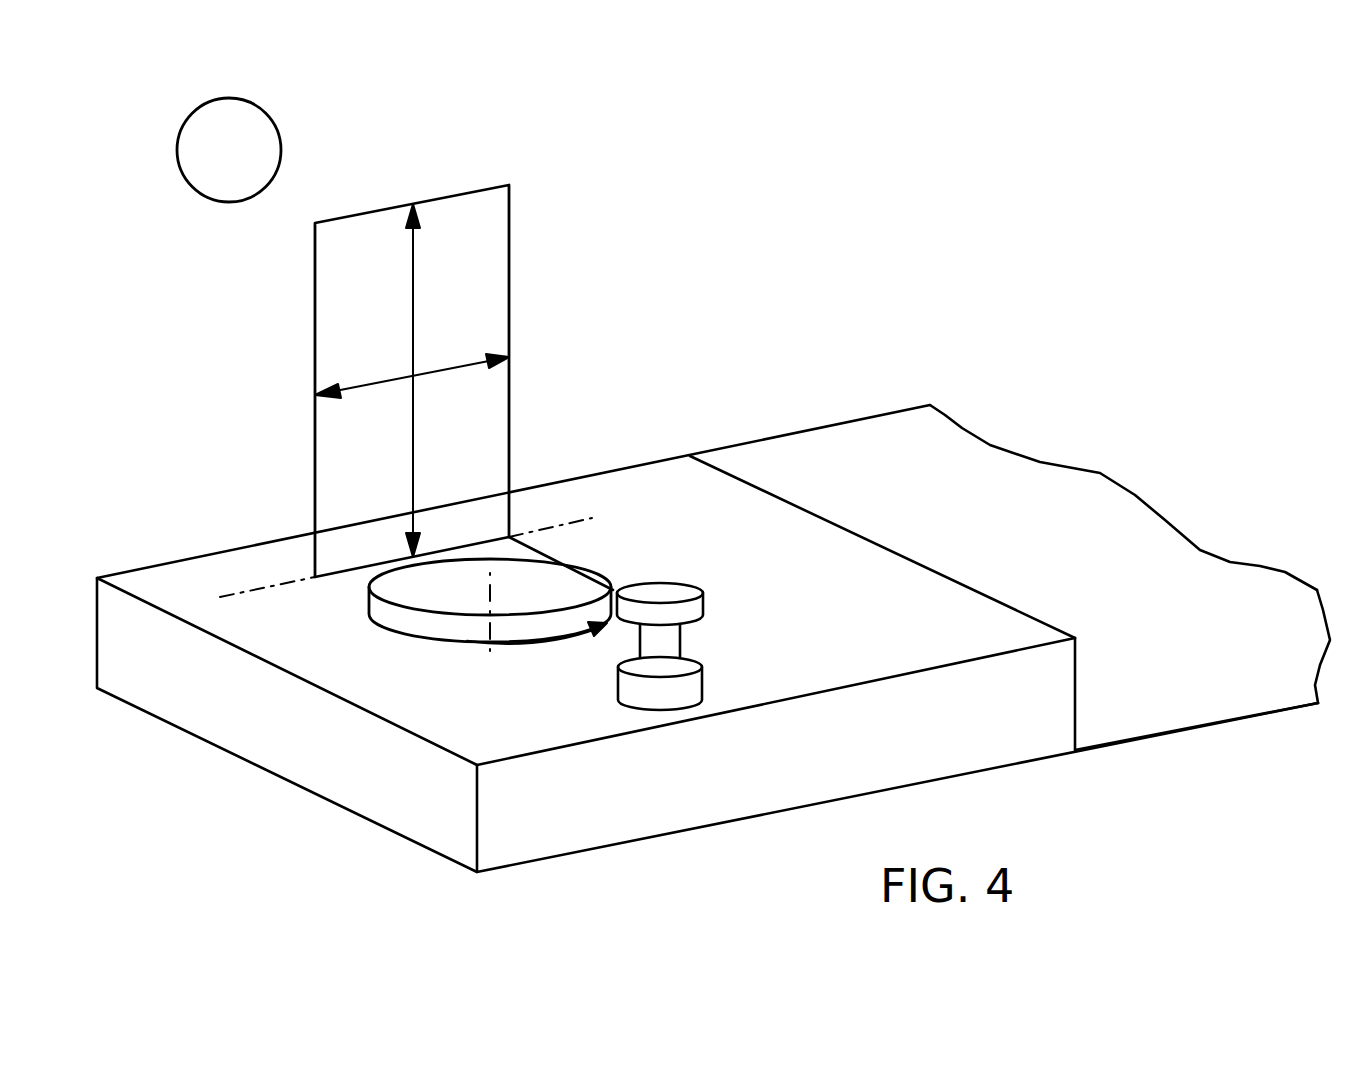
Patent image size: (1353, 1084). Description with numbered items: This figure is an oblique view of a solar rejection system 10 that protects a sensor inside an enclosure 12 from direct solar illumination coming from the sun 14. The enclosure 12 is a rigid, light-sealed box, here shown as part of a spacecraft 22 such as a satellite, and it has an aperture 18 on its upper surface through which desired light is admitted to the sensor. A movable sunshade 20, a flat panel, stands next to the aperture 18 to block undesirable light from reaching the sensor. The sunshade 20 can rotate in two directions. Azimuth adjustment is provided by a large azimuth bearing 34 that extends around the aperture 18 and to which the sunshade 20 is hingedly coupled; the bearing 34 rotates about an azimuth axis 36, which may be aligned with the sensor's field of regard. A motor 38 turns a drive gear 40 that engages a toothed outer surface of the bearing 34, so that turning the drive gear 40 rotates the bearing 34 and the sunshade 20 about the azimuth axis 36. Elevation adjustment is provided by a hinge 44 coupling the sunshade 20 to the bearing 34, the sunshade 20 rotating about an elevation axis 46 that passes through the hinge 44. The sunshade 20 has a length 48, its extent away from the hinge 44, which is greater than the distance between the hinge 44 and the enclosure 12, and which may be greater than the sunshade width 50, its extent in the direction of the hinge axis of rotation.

The solar rejection system 10 is at (676, 244).
The enclosure 12 is at (173, 562).
The sun 14 is at (260, 140).
The aperture 18 is at (565, 595).
The sunshade 20 is at (509, 185).
The spacecraft 22 is at (747, 460).
The azimuth bearing 34 is at (433, 627).
The azimuth axis 36 is at (493, 597).
The motor 38 is at (683, 695).
The drive gear 40 is at (692, 610).
The hinge 44 is at (347, 570).
The elevation axis 46 is at (262, 590).
The sunshade length 48 is at (413, 318).
The sunshade width 50 is at (368, 385).